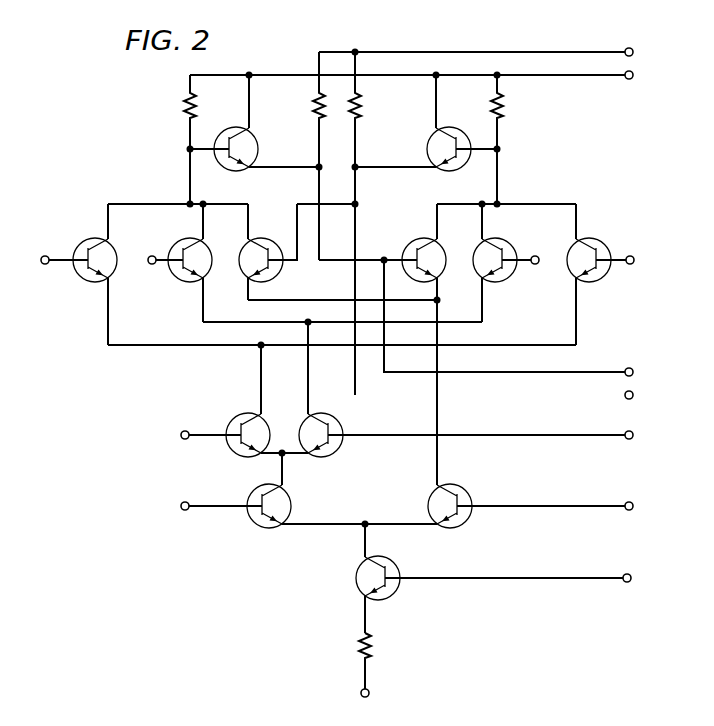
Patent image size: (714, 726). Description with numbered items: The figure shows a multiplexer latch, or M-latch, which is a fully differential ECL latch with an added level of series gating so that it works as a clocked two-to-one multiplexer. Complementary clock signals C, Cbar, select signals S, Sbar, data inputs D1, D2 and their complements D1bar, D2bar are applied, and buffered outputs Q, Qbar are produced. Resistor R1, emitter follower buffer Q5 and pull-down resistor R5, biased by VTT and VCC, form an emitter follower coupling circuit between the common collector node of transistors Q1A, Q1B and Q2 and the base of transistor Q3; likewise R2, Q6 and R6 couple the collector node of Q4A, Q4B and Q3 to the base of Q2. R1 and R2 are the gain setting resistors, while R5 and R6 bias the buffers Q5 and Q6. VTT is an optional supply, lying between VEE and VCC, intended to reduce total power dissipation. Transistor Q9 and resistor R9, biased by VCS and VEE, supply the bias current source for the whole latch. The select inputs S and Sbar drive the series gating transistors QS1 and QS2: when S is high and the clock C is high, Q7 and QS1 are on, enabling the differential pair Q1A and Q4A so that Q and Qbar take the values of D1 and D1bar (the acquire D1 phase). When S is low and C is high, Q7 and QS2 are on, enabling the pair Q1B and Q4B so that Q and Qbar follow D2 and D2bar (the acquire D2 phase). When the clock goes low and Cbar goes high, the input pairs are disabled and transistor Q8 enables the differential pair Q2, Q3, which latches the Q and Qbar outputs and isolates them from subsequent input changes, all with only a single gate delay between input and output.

The gain setting resistor R1 is at (178, 139).
The pull-down resistor R5 is at (306, 156).
The pull-down resistor R6 is at (366, 223).
The gain setting resistor R2 is at (507, 139).
The resistor R9 is at (378, 661).
The emitter follower buffer Q5 is at (254, 123).
The emitter follower buffer Q6 is at (426, 123).
The transistor Q1A is at (83, 274).
The transistor Q1B is at (184, 263).
The transistor Q2 is at (268, 252).
The transistor Q3 is at (472, 288).
The transistor Q4B is at (502, 263).
The transistor Q4A is at (596, 274).
The series gating transistor QS1 is at (248, 401).
The series gating transistor QS2 is at (462, 389).
The transistor Q7 is at (313, 490).
The transistor Q8 is at (515, 414).
The transistor Q9 is at (479, 578).
The optional supply VTT is at (494, 52).
The supply VCC is at (429, 75).
The bias supply VCS is at (645, 579).
The negative supply VEE is at (383, 693).
The data input D1 is at (37, 260).
The data input D2 is at (142, 260).
The complementary data input D1bar is at (656, 250).
The complementary data input D2bar is at (560, 250).
The buffered output Q is at (638, 396).
The complementary buffered output Qbar is at (652, 362).
The select input S is at (178, 435).
The complementary select input Sbar is at (650, 426).
The clock input C is at (178, 506).
The complementary clock input Cbar is at (650, 497).